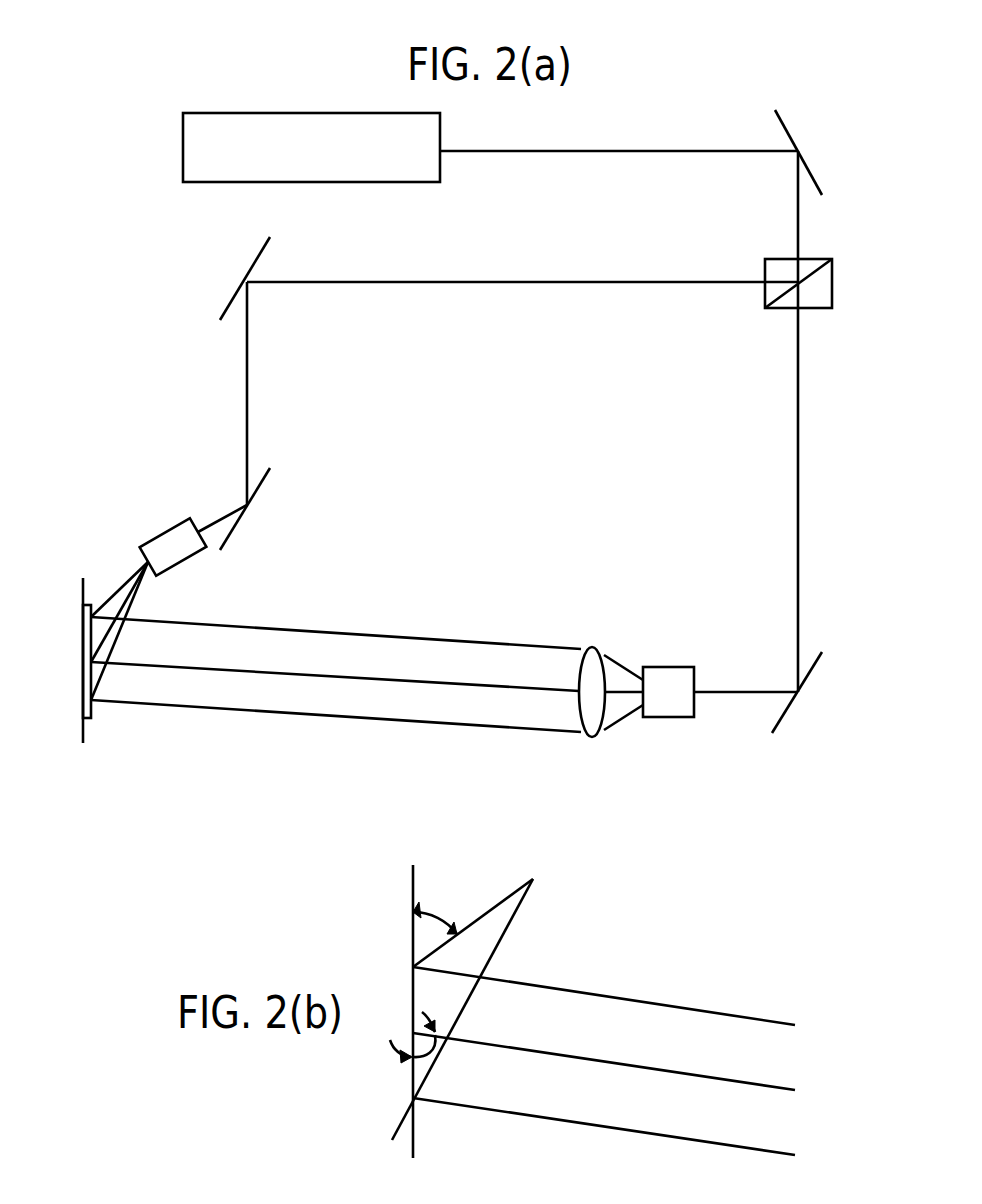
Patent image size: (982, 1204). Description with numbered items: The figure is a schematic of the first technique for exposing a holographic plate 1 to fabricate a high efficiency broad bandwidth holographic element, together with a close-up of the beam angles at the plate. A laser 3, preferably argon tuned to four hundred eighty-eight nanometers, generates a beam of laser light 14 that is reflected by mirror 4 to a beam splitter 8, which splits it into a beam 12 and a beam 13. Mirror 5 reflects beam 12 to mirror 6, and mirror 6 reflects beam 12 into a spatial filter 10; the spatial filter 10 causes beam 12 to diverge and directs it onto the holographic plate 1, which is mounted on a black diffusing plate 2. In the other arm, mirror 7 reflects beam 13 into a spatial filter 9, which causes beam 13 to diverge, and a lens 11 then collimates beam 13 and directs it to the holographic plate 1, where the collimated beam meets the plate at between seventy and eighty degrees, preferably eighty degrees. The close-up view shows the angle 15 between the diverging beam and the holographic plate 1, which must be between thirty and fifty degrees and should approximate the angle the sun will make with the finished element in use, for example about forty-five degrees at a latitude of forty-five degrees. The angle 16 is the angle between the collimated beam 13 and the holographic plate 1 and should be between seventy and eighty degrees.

In FIG. 2A, the holographic plate 1 is at (92, 711).
In FIG. 2B, the holographic plate 1 is at (411, 997).
In FIG. 2A, the black diffusing plate 2 is at (83, 595).
In FIG. 2A, the laser 3 is at (183, 165).
In FIG. 2A, the mirror 4 is at (812, 168).
In FIG. 2A, the mirror 5 is at (228, 300).
In FIG. 2A, the mirror 6 is at (257, 493).
In FIG. 2A, the mirror 7 is at (790, 708).
In FIG. 2A, the beam splitter 8 is at (832, 292).
In FIG. 2A, the spatial filter 9 is at (667, 667).
In FIG. 2A, the spatial filter 10 is at (178, 519).
In FIG. 2A, the lens 11 is at (592, 647).
In FIG. 2A, the beam 12 is at (593, 282).
In FIG. 2B, the beam 12 is at (497, 920).
In FIG. 2A, the beam 13 is at (798, 428).
In FIG. 2B, the beam 13 is at (540, 1122).
In FIG. 2A, the beam of laser light 14 is at (593, 151).
In FIG. 2B, the angle 15 is at (440, 905).
In FIG. 2B, the angle 16 is at (438, 1068).